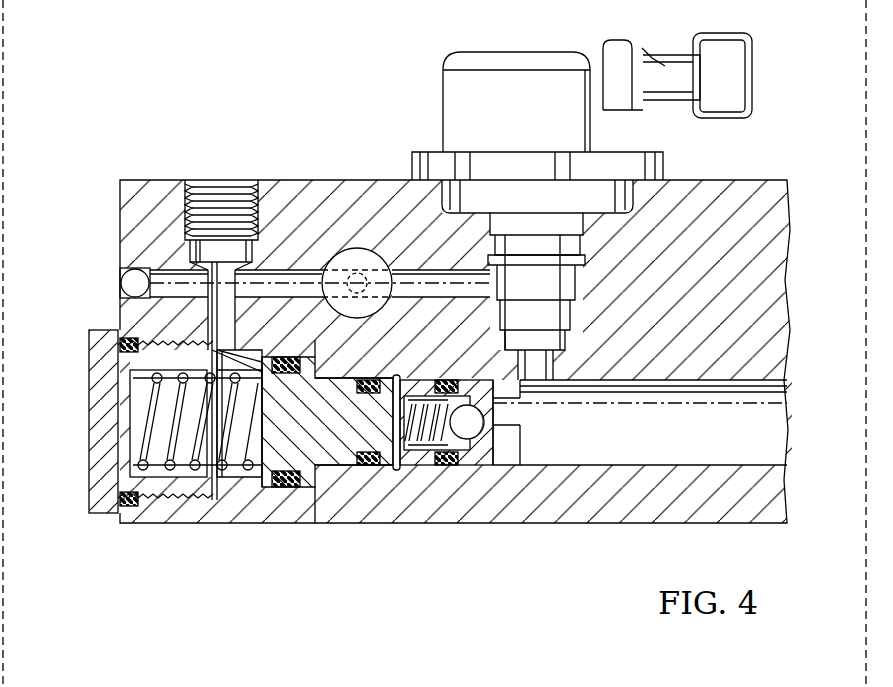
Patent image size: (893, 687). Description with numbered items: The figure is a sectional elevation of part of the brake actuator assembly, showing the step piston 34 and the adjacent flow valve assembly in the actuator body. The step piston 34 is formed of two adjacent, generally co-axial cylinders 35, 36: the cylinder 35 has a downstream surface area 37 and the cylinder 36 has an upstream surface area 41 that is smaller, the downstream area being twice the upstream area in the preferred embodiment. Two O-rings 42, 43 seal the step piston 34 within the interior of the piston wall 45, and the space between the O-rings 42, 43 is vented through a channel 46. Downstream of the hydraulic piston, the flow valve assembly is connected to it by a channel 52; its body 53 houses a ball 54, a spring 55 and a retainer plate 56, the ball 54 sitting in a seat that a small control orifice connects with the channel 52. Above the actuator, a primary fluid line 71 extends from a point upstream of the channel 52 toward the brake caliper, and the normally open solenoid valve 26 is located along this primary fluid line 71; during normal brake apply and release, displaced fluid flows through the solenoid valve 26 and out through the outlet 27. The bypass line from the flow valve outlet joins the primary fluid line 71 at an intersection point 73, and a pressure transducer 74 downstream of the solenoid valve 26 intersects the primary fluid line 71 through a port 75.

The normally open solenoid valve 26 is at (498, 72).
The outlet 27 is at (203, 180).
The step piston 34 is at (278, 438).
The cylinder 35 is at (305, 498).
The cylinder 36 is at (352, 482).
The downstream surface area 37 is at (258, 427).
The upstream surface area 41 is at (414, 447).
The O-ring 42 is at (282, 490).
The O-ring 43 is at (376, 474).
The piston wall 45 is at (240, 482).
The channel 46 is at (332, 482).
The channel 52 is at (507, 399).
The body 53 is at (493, 410).
The ball 54 is at (489, 410).
The spring 55 is at (478, 428).
The retainer plate 56 is at (466, 447).
The primary fluid line 71 is at (281, 258).
The intersection point 73 is at (185, 262).
The pressure transducer 74 is at (366, 249).
The port 75 is at (326, 270).